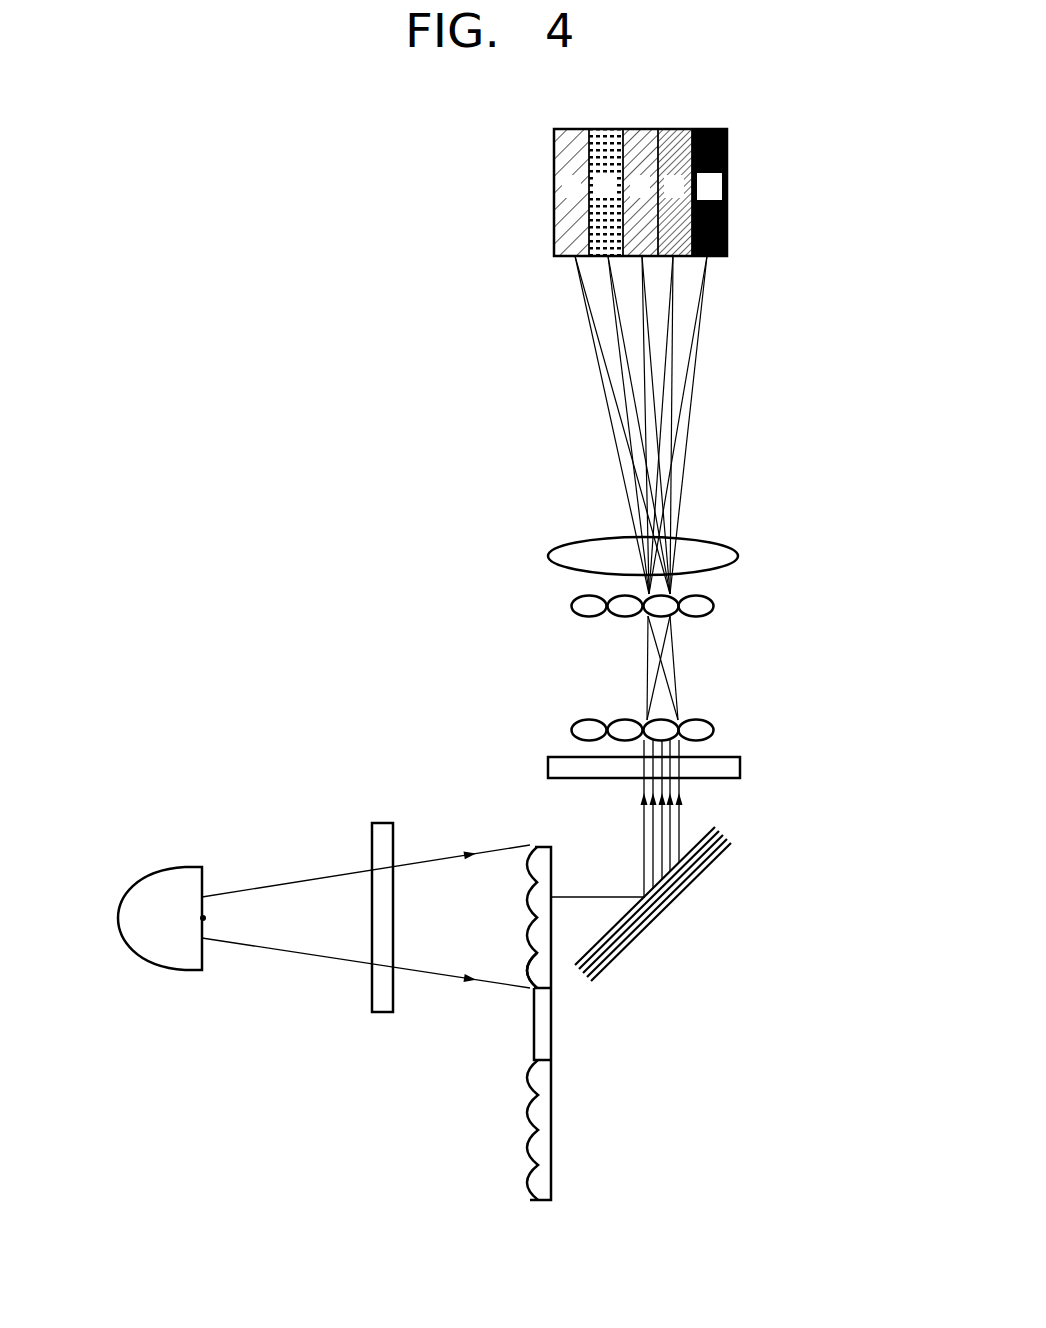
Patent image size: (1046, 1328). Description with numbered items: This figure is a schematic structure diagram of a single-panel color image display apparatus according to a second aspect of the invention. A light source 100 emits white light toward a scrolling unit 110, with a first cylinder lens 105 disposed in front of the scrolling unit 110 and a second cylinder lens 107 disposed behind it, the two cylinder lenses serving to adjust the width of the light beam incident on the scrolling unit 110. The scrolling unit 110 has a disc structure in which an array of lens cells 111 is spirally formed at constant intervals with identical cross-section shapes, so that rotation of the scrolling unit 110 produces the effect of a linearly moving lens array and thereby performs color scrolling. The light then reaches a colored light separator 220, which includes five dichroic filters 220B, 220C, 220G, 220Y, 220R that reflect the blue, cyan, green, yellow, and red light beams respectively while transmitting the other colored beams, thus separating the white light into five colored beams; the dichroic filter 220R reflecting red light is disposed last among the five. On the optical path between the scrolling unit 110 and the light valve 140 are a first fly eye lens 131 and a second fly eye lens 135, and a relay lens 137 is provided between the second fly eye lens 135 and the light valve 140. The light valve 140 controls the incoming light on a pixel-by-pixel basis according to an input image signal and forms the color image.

The light source 100 is at (118, 852).
The first cylinder lens 105 is at (382, 823).
The second cylinder lens 107 is at (740, 767).
The scrolling unit 110 is at (503, 973).
The lens cell 111 is at (530, 962).
The first fly eye lens 131 is at (714, 728).
The second fly eye lens 135 is at (714, 604).
The relay lens 137 is at (738, 553).
The light valve 140 is at (727, 186).
The colored light separator 220 is at (676, 953).
The dichroic filter 220R is at (693, 888).
The dichroic filter 220Y is at (665, 917).
The dichroic filter 220G is at (640, 938).
The dichroic filter 220C is at (610, 965).
The dichroic filter 220B is at (573, 963).